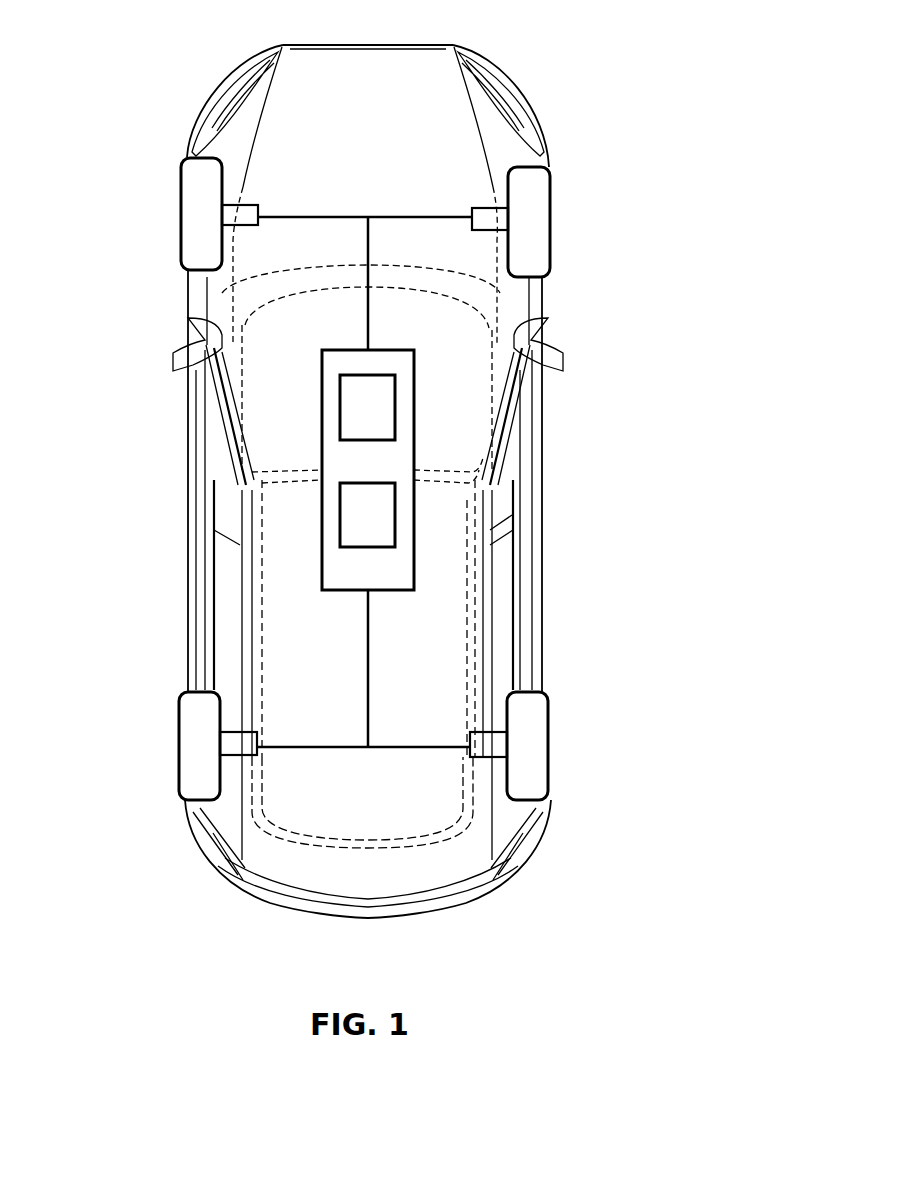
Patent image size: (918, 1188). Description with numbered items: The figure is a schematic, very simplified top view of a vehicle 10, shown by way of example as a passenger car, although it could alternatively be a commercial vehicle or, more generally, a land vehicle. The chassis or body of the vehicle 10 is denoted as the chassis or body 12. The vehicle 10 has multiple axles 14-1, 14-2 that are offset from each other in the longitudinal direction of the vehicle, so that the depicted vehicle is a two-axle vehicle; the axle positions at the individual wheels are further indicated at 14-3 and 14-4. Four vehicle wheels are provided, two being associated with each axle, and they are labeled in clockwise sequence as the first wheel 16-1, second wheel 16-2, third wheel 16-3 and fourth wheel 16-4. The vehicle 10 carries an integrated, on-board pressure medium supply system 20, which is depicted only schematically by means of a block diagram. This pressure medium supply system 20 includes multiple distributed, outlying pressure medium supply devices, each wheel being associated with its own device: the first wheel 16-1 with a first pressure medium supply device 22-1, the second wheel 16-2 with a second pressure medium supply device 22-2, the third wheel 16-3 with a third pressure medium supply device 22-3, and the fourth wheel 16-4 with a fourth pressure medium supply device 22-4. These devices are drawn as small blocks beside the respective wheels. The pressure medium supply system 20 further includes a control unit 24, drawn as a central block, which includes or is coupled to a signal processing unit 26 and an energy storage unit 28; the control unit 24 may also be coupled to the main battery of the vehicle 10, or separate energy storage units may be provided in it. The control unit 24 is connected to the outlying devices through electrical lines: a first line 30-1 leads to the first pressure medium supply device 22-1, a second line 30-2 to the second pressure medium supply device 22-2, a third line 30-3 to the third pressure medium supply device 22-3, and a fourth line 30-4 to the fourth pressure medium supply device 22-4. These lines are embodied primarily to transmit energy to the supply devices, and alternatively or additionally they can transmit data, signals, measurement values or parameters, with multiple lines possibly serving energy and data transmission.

The vehicle 10 is at (376, 157).
The chassis or body 12 is at (495, 73).
The axle 14-1 is at (553, 220).
The axle 14-2 is at (553, 750).
The rear left wheel 14-3 is at (175, 747).
The front left wheel 14-4 is at (175, 215).
The first wheel 16-1 is at (549, 262).
The second wheel 16-2 is at (549, 790).
The third wheel 16-3 is at (180, 785).
The fourth wheel 16-4 is at (181, 253).
The first pressure medium supply device 22-1 is at (495, 218).
The second pressure medium supply device 22-2 is at (495, 745).
The third pressure medium supply device 22-3 is at (235, 742).
The fourth pressure medium supply device 22-4 is at (235, 212).
The first line 30-1 is at (400, 215).
The second line 30-2 is at (400, 745).
The third line 30-3 is at (330, 745).
The fourth line 30-4 is at (330, 215).
The pressure medium supply system 20 is at (414, 455).
The control unit 24 is at (368, 470).
The signal processing unit 26 is at (378, 520).
The energy storage unit 28 is at (378, 400).